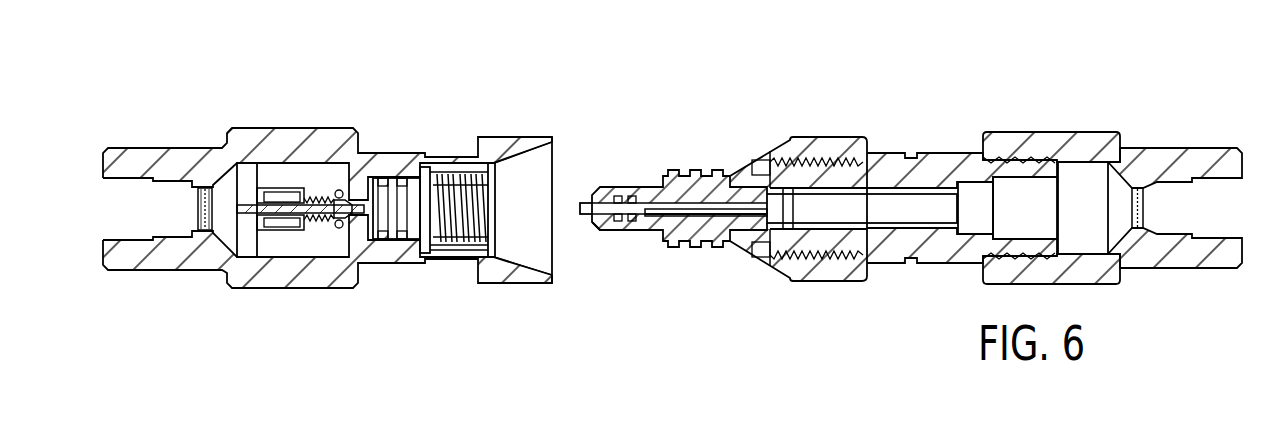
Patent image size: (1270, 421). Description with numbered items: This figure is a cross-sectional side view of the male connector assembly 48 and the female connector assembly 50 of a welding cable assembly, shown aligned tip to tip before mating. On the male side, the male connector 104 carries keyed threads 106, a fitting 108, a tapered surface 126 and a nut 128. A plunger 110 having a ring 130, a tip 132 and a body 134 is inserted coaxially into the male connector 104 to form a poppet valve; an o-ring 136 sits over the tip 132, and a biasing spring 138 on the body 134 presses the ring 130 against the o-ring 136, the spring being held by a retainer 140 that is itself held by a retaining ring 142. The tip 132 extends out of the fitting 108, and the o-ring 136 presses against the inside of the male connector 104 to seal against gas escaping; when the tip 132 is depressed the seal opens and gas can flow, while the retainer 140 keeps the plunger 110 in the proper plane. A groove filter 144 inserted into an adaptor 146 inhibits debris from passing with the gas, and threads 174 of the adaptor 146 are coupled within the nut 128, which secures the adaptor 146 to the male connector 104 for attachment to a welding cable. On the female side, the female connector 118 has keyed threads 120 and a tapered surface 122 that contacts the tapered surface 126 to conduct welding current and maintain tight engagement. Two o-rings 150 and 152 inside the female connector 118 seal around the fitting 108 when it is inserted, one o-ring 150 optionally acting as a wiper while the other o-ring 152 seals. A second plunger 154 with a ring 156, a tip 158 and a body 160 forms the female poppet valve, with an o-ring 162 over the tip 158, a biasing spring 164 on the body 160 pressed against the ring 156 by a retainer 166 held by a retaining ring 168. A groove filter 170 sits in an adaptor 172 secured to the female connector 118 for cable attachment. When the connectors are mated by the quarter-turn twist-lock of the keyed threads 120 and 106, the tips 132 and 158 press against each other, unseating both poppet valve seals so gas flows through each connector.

The male connector assembly 48 is at (1158, 66).
The female connector assembly 50 is at (240, 66).
The male connector 104 is at (830, 282).
The keyed threads 106 is at (688, 248).
The fitting 108 is at (617, 198).
The plunger 110 is at (632, 200).
The female connector 118 is at (503, 277).
The keyed threads 120 is at (460, 175).
The tapered surface 122 is at (535, 143).
The tapered surface 126 is at (770, 262).
The nut 128 is at (830, 137).
The ring 130 is at (612, 203).
The tip 132 is at (584, 203).
The body 134 is at (678, 216).
The o-ring 136 is at (603, 230).
The biasing spring 138 is at (624, 222).
The retainer 140 is at (703, 200).
The retaining ring 142 is at (768, 190).
The groove filter 144 is at (1139, 229).
The adaptor 146 is at (935, 264).
The o-ring 150 is at (403, 240).
The o-ring 152 is at (382, 240).
The plunger 154 is at (300, 200).
The ring 156 is at (330, 222).
The tip 158 is at (365, 192).
The body 160 is at (278, 207).
The o-ring 162 is at (345, 197).
The biasing spring 164 is at (305, 222).
The retainer 166 is at (278, 228).
The retaining ring 168 is at (247, 240).
The groove filter 170 is at (200, 190).
The adaptor 172 is at (143, 260).
The threads 174 is at (835, 165).